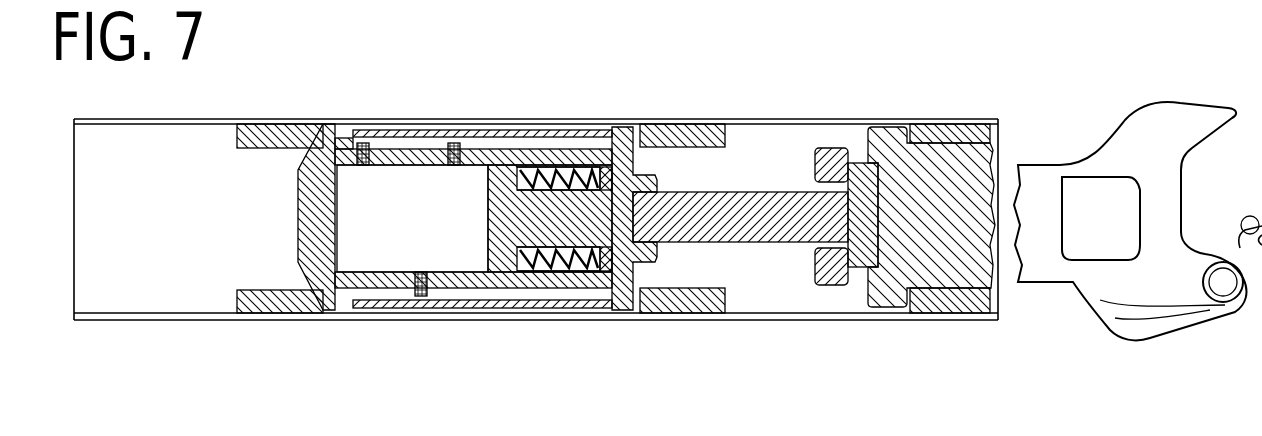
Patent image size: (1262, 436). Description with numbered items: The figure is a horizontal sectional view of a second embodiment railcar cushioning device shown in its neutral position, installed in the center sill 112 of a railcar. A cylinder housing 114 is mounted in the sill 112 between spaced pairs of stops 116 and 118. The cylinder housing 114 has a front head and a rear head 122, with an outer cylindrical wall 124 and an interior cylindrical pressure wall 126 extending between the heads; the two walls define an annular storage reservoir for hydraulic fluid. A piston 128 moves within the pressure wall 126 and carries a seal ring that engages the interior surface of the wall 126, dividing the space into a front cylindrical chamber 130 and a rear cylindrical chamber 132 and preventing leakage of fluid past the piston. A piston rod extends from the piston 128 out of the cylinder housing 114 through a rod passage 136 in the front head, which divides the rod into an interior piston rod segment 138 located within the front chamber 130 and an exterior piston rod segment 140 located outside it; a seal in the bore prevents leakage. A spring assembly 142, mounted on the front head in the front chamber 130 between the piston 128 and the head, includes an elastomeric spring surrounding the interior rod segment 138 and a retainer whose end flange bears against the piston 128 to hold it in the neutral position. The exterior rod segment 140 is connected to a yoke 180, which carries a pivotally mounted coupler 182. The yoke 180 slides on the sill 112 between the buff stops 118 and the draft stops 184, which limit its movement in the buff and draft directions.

The center sill 112 is at (147, 118).
The cylinder housing 114 is at (468, 132).
The stops 116 is at (232, 133).
The buff stops 118 is at (700, 128).
The rear head 122 is at (298, 215).
The outer cylindrical wall 124 is at (527, 132).
The interior cylindrical pressure wall 126 is at (387, 290).
The piston 128 is at (493, 235).
The front cylindrical chamber 130 is at (580, 268).
The rear cylindrical chamber 132 is at (387, 226).
The rod passage 136 is at (655, 244).
The interior piston rod segment 138 is at (592, 205).
The exterior piston rod segment 140 is at (752, 190).
The spring assembly 142 is at (550, 268).
The yoke 180 is at (993, 288).
The coupler 182 is at (1120, 113).
The draft stops 184 is at (918, 127).